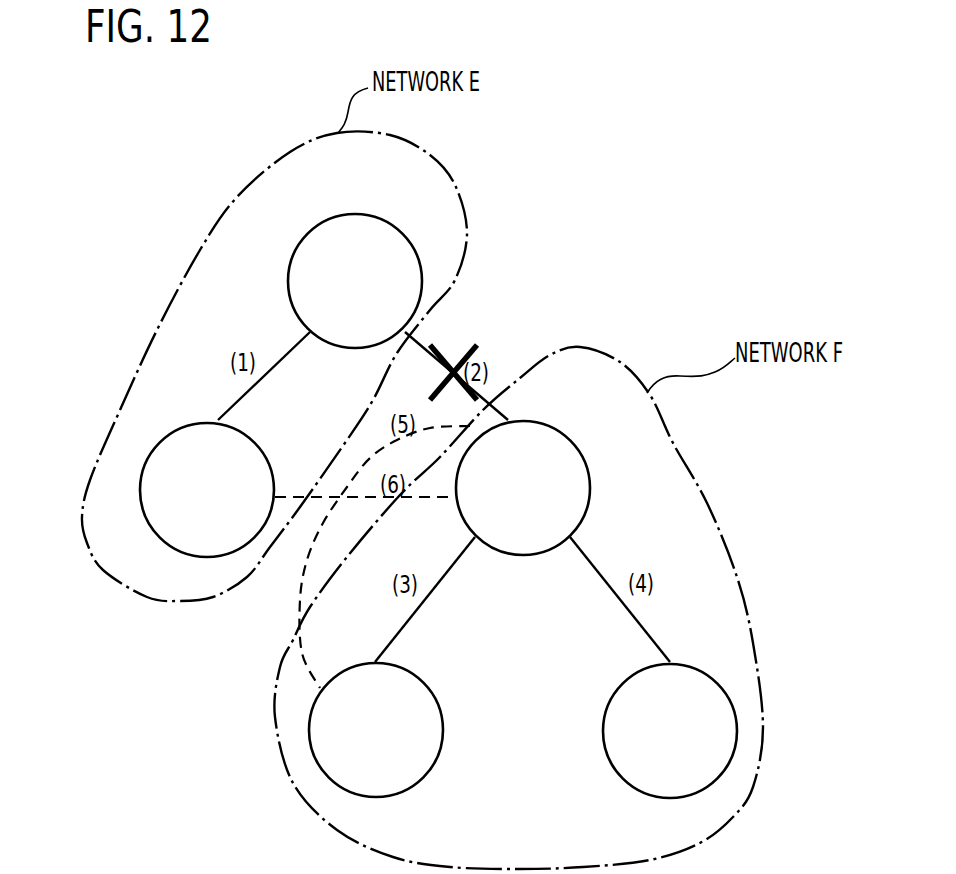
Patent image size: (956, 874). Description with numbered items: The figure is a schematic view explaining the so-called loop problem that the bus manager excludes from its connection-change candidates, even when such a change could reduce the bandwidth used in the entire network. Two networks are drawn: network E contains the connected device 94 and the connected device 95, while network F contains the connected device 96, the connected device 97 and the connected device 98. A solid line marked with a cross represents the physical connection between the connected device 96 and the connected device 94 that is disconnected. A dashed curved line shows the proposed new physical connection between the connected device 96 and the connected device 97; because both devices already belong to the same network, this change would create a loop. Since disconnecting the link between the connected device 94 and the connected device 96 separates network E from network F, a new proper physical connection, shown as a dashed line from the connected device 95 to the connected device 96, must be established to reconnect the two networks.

The connected device 94 is at (355, 265).
The connected device 95 is at (207, 473).
The connected device 96 is at (524, 481).
The connected device 97 is at (376, 715).
The connected device 98 is at (670, 716).